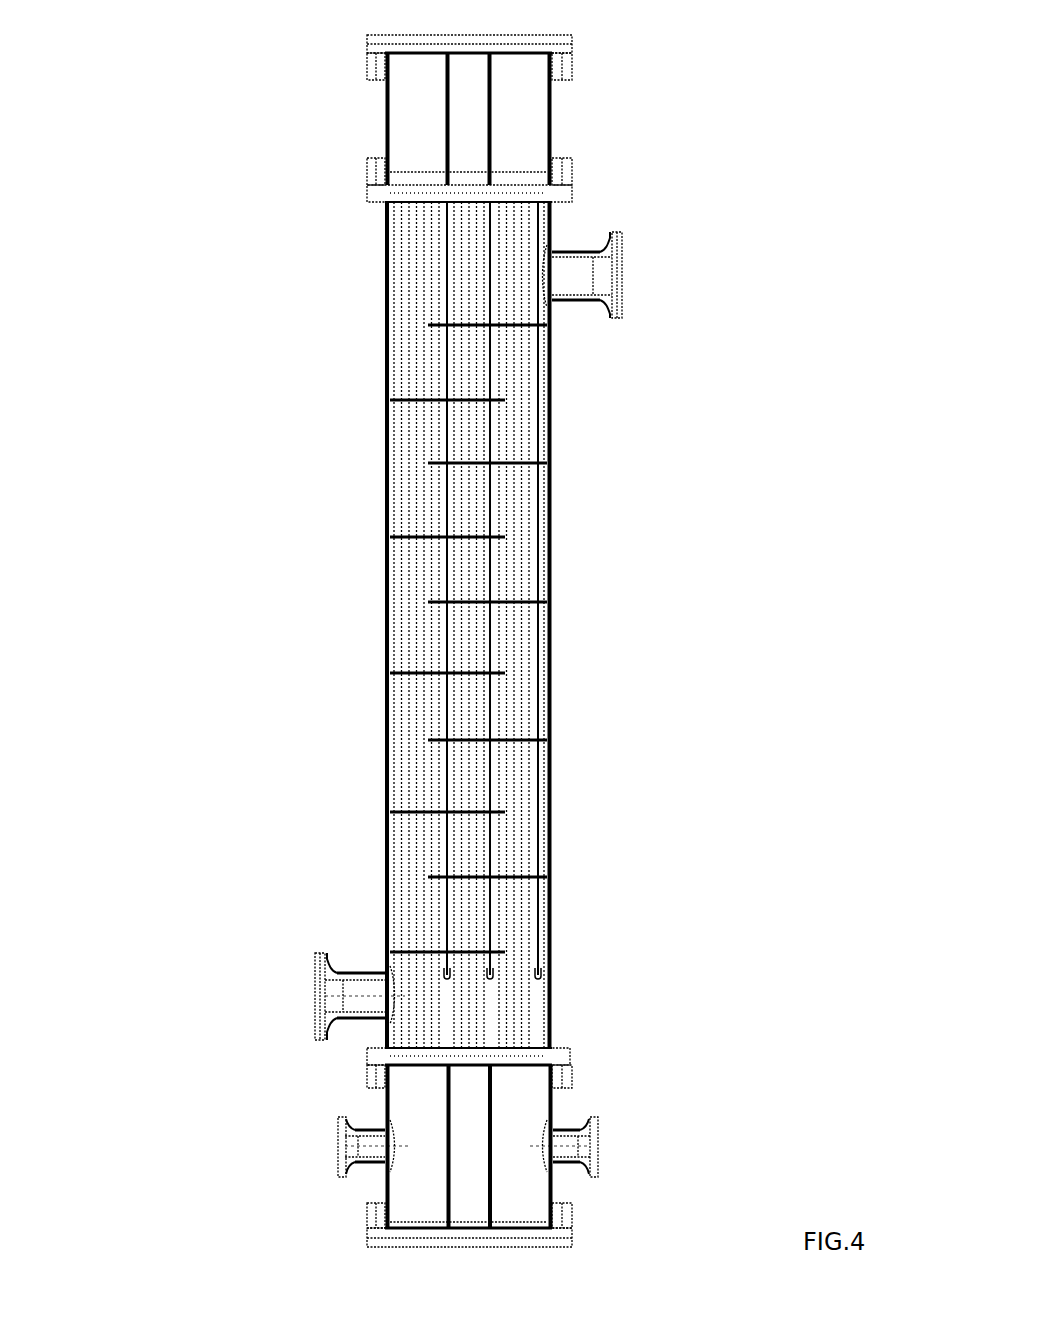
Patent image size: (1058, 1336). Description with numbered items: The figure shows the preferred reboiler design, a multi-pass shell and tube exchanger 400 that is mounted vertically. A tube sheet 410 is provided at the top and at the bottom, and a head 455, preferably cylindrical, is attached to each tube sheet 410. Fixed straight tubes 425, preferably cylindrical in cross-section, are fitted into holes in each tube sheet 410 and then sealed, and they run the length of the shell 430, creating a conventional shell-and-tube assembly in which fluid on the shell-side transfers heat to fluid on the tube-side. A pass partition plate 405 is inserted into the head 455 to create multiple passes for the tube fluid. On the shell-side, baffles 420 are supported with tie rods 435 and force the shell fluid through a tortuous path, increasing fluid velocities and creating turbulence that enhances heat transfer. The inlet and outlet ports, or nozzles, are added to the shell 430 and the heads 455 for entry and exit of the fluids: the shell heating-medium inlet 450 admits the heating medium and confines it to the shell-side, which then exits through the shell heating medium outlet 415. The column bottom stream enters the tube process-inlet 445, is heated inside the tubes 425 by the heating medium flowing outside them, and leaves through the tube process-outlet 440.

The multi-pass shell and tube exchanger 400 is at (250, 158).
The pass partition plate 405 is at (492, 117).
The tube sheet 410 is at (570, 197).
The shell heating medium outlet 415 is at (638, 275).
The baffles 420 is at (485, 400).
The fixed straight tubes 425 is at (513, 507).
The shell 430 is at (553, 622).
The tie rods 435 is at (397, 900).
The tube process-outlet 440 is at (610, 1147).
The tube process-inlet 445 is at (325, 1143).
The shell heating-medium inlet 450 is at (302, 993).
The head 455 is at (385, 108).